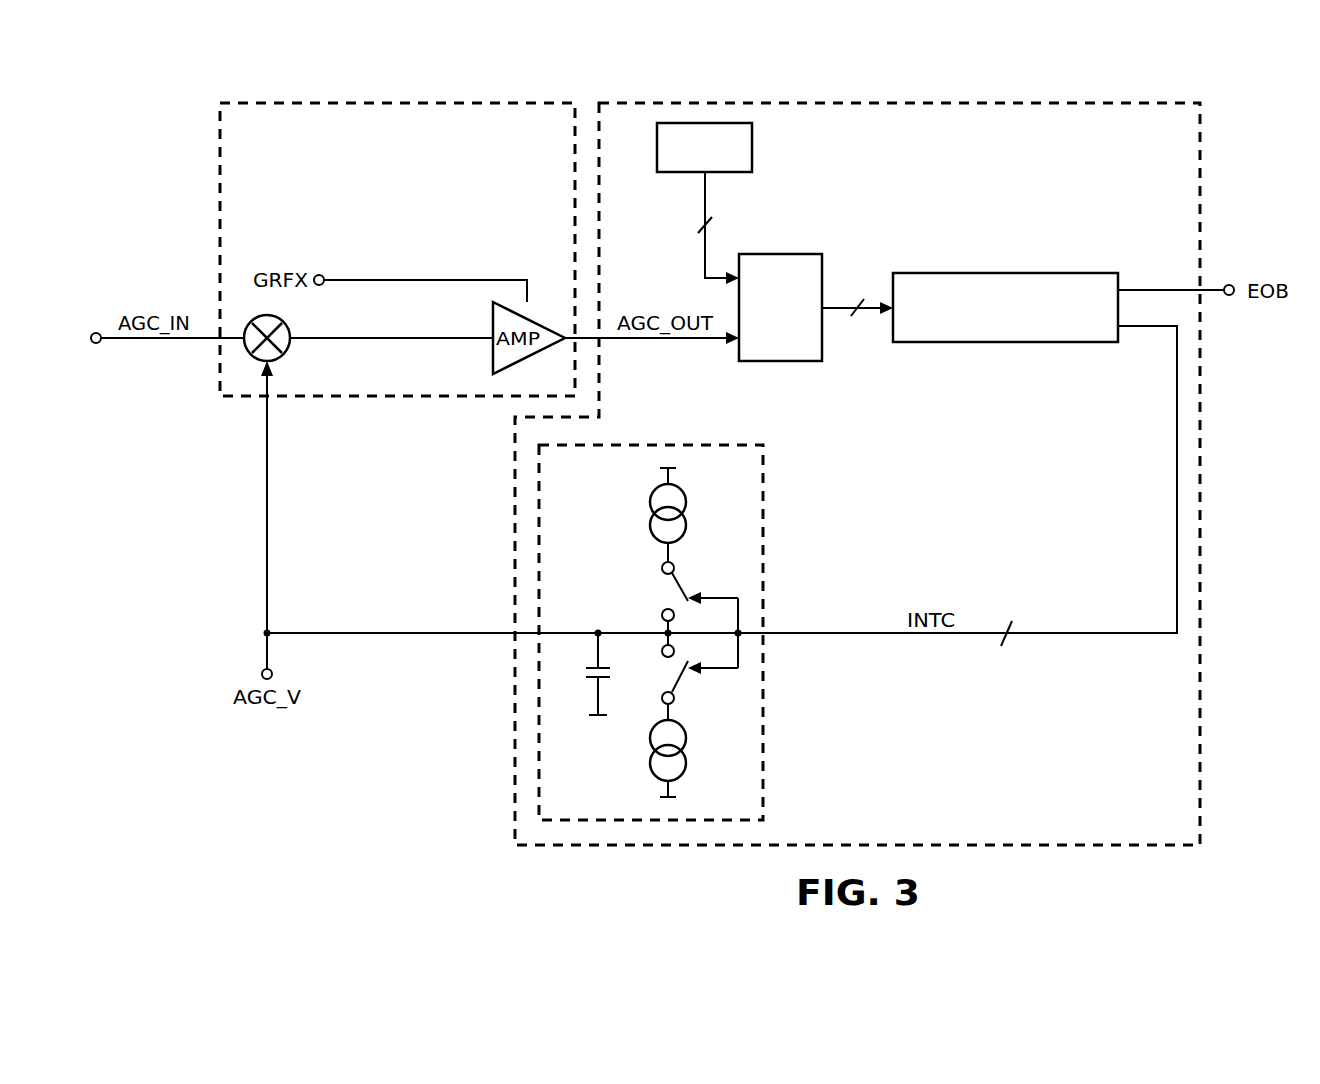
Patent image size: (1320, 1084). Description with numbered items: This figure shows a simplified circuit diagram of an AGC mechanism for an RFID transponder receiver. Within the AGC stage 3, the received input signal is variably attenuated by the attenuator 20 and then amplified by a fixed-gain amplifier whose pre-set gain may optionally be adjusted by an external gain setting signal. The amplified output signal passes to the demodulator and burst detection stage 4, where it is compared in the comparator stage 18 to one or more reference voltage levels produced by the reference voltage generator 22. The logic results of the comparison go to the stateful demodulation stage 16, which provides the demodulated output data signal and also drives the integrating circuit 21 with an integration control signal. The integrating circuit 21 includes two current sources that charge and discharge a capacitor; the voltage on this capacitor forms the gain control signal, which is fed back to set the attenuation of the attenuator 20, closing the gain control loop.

The demodulator and burst detection stage 4 is at (1208, 190).
The automatic gain control (AGC) stage 3 is at (397, 249).
The attenuator 20 is at (304, 474).
The reference voltage generator 22 is at (752, 145).
The comparator stage 18 is at (790, 254).
The stateful demodulation stage 16 is at (1005, 273).
The integrating circuit 21 is at (651, 632).